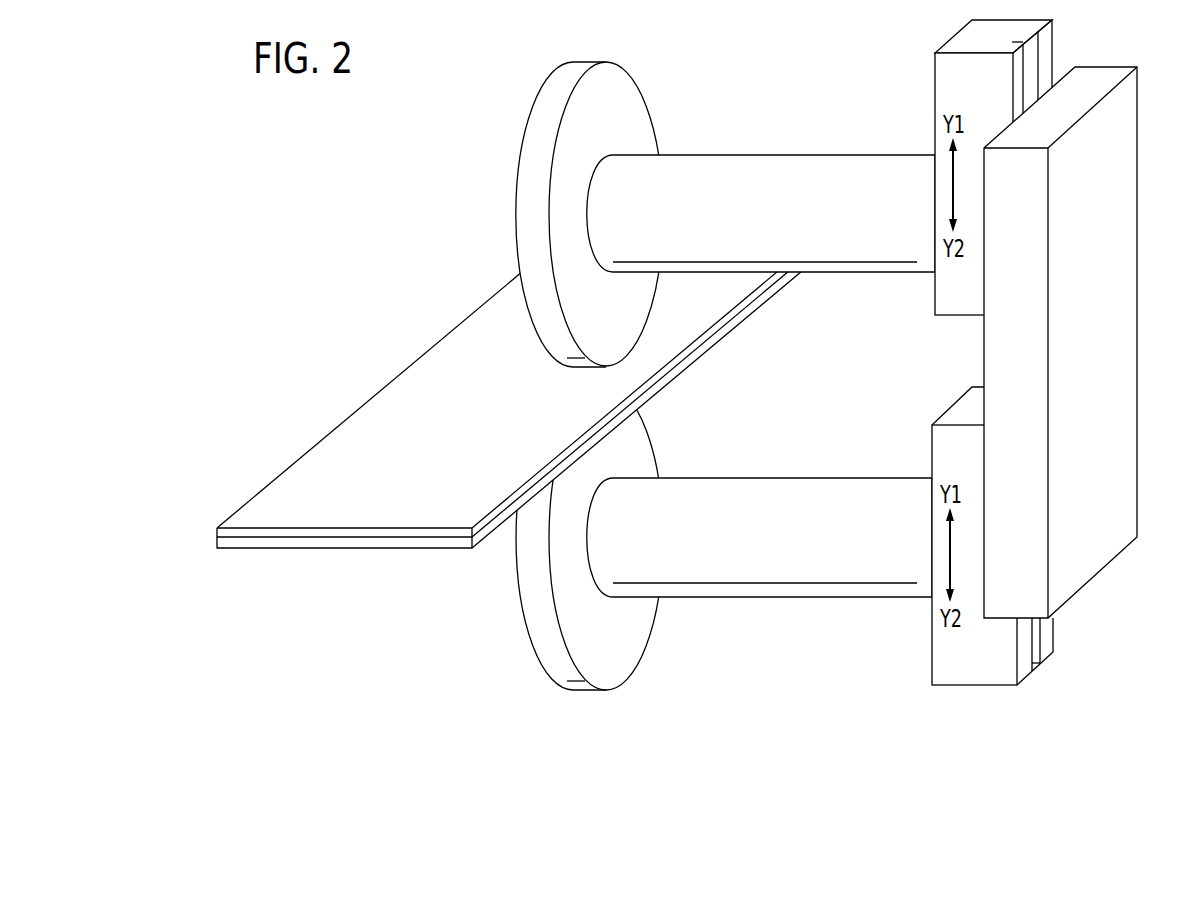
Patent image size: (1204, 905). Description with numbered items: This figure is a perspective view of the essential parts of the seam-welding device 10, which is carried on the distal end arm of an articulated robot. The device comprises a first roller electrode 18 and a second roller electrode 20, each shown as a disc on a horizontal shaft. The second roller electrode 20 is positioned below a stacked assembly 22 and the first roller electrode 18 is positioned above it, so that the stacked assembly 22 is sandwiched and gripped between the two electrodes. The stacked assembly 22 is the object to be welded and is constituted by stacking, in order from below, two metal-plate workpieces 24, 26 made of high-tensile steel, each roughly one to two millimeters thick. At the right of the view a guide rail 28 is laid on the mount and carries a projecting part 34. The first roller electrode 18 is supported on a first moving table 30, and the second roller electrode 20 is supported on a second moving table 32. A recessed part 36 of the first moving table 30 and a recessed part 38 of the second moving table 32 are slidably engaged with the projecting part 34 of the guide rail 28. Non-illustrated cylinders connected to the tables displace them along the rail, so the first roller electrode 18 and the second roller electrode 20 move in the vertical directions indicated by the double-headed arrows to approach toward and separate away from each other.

The seam-welding device 10 is at (361, 149).
The first roller electrode 18 is at (532, 138).
The second roller electrode 20 is at (638, 647).
The stacked assembly 22 is at (479, 411).
The workpiece 24 is at (255, 547).
The workpiece 26 is at (240, 523).
The guide rail 28 is at (1132, 103).
The first moving table 30 is at (1002, 162).
The second moving table 32 is at (1020, 560).
The projecting part 34 is at (1032, 102).
The recessed part 36 is at (1035, 53).
The recessed part 38 is at (1037, 647).